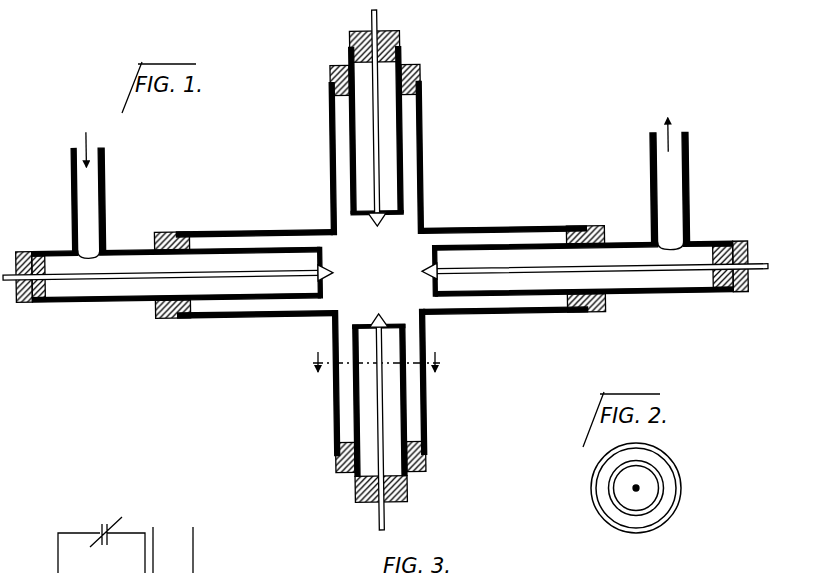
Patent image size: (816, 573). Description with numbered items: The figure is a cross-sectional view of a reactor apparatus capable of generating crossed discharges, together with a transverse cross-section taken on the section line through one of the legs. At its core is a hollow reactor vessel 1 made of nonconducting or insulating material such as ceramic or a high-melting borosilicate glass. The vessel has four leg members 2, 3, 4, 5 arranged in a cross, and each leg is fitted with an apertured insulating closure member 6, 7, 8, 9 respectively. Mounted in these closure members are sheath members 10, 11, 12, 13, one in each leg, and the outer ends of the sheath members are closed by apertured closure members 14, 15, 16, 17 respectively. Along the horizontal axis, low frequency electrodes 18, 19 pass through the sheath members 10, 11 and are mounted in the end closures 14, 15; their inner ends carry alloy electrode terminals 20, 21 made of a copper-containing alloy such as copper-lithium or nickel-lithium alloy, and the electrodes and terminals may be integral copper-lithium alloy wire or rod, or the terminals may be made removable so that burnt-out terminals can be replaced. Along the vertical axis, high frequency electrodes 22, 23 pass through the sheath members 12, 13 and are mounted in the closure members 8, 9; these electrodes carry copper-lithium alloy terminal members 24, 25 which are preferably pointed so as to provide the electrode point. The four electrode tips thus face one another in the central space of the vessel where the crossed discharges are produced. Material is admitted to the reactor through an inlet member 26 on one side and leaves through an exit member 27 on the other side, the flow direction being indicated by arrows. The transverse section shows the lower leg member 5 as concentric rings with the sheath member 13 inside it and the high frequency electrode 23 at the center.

In FIG. 1, the hollow reactor vessel 1 is at (271, 204).
In FIG. 1, the leg member 2 is at (215, 230).
In FIG. 1, the leg member 3 is at (502, 227).
In FIG. 1, the leg member 4 is at (425, 143).
In FIG. 1, the leg member 5 is at (427, 390).
In FIG. 2, the leg member 5 is at (675, 470).
In FIG. 1, the apertured insulating closure member 6 is at (163, 316).
In FIG. 1, the apertured insulating closure member 7 is at (593, 228).
In FIG. 1, the apertured insulating closure member 8 is at (418, 72).
In FIG. 1, the apertured insulating closure member 9 is at (425, 460).
In FIG. 1, the sheath member 10 is at (122, 303).
In FIG. 1, the sheath member 11 is at (652, 290).
In FIG. 1, the sheath member 12 is at (350, 126).
In FIG. 1, the sheath member 13 is at (360, 392).
In FIG. 2, the sheath member 13 is at (658, 505).
In FIG. 1, the apertured closure member 14 is at (20, 302).
In FIG. 1, the apertured closure member 15 is at (740, 290).
In FIG. 1, the apertured closure member 16 is at (352, 40).
In FIG. 1, the apertured closure member 17 is at (358, 498).
In FIG. 1, the low frequency electrode 18 is at (223, 275).
In FIG. 1, the low frequency electrode 19 is at (550, 272).
In FIG. 1, the alloy electrode terminal 20 is at (339, 278).
In FIG. 1, the alloy electrode terminal 21 is at (422, 270).
In FIG. 1, the high frequency electrode 22 is at (375, 152).
In FIG. 1, the high frequency electrode 23 is at (378, 412).
In FIG. 2, the high frequency electrode 23 is at (635, 488).
In FIG. 1, the copper-lithium alloy terminal member 24 is at (365, 235).
In FIG. 1, the copper-lithium alloy terminal member 25 is at (387, 317).
In FIG. 1, the inlet member 26 is at (73, 198).
In FIG. 1, the exit member 27 is at (690, 162).